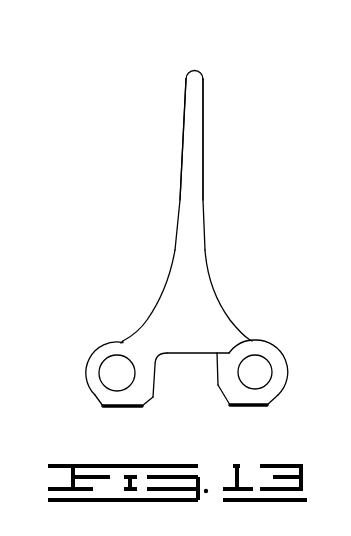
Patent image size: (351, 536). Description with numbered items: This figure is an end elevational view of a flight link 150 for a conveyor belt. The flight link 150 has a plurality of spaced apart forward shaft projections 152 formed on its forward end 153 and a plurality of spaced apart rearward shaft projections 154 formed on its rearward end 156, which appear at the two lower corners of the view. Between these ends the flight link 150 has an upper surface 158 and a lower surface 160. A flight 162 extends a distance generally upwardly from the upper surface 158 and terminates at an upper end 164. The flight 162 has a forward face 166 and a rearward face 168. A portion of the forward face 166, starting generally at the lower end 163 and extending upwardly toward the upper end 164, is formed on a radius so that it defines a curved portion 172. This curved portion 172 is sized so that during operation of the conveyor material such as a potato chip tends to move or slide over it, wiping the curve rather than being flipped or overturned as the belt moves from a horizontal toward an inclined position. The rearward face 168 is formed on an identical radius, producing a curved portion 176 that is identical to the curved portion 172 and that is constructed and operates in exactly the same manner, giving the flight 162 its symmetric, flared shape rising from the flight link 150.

The flight link 150 is at (209, 102).
The forward shaft projections 152 is at (93, 343).
The forward end 153 is at (91, 400).
The rearward shaft projections 154 is at (273, 342).
The rearward end 156 is at (277, 398).
The upper surface 158 is at (252, 340).
The lower surface 160 is at (177, 357).
The flight 162 is at (350, 142).
The lower end 163 is at (123, 340).
The upper end 164 is at (199, 70).
The forward face 166 is at (180, 218).
The rearward face 168 is at (205, 140).
The curved portion 172 is at (153, 307).
The curved portion 176 is at (226, 310).